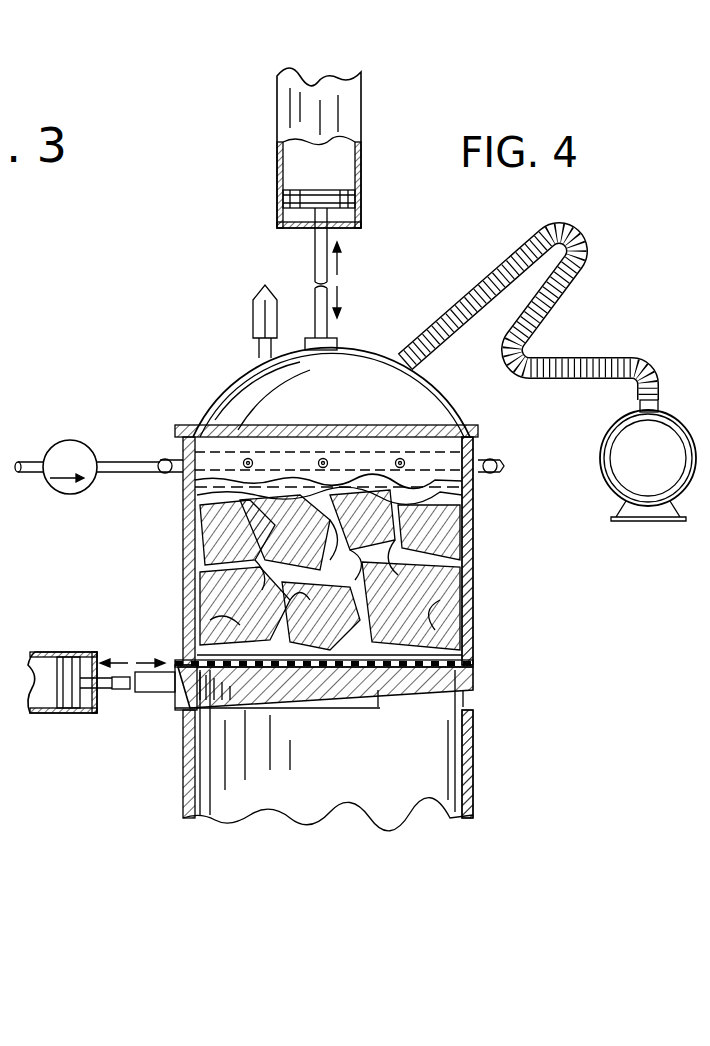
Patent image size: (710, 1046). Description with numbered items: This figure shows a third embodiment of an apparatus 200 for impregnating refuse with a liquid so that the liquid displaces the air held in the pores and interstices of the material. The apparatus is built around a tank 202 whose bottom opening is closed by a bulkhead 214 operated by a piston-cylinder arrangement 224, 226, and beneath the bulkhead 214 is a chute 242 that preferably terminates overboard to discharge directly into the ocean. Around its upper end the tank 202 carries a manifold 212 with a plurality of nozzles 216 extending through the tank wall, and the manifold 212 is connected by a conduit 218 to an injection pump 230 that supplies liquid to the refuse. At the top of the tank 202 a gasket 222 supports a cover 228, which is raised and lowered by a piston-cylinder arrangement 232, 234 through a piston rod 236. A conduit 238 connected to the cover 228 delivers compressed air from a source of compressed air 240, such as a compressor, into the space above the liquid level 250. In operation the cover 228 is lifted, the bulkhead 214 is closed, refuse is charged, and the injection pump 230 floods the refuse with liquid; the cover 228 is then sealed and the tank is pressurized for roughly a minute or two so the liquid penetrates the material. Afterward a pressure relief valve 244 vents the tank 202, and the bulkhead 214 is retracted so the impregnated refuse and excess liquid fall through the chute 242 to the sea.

The apparatus 200 is at (486, 587).
The tank 202 is at (190, 548).
The manifold 212 is at (167, 456).
The bulkhead 214 is at (377, 697).
The nozzles 216 is at (250, 447).
The conduit 218 is at (127, 472).
The gasket 222 is at (243, 458).
The piston 224 is at (87, 651).
The cylinder 226 is at (51, 652).
The cover 228 is at (242, 380).
The injection pump 230 is at (68, 440).
The piston 232 is at (337, 194).
The cylinder 234 is at (343, 125).
The piston rod 236 is at (318, 256).
The conduit 238 is at (583, 266).
The source of compressed air 240 is at (636, 441).
The chute 242 is at (230, 770).
The pressure relief valve 244 is at (256, 320).
The liquid level 250 is at (288, 470).